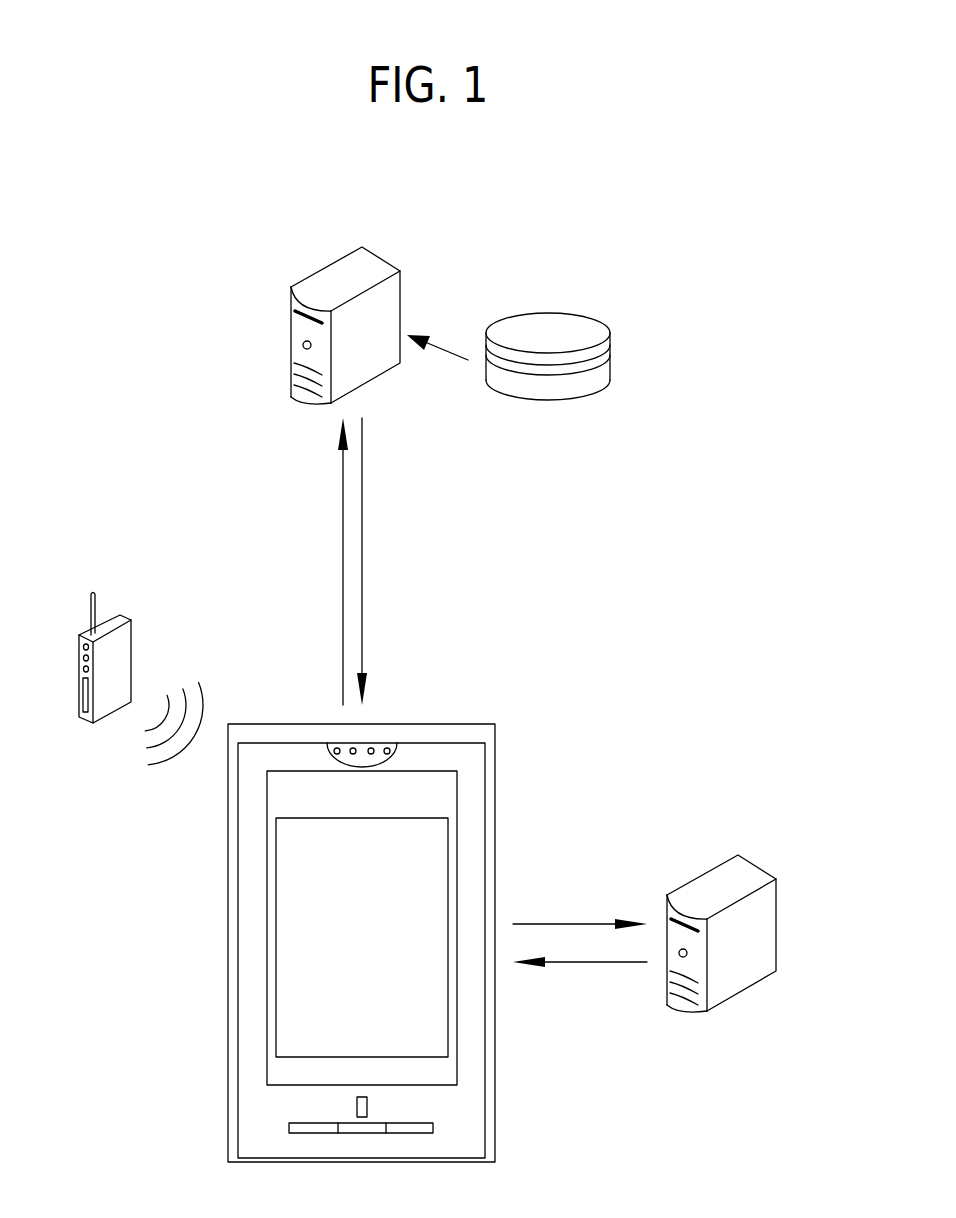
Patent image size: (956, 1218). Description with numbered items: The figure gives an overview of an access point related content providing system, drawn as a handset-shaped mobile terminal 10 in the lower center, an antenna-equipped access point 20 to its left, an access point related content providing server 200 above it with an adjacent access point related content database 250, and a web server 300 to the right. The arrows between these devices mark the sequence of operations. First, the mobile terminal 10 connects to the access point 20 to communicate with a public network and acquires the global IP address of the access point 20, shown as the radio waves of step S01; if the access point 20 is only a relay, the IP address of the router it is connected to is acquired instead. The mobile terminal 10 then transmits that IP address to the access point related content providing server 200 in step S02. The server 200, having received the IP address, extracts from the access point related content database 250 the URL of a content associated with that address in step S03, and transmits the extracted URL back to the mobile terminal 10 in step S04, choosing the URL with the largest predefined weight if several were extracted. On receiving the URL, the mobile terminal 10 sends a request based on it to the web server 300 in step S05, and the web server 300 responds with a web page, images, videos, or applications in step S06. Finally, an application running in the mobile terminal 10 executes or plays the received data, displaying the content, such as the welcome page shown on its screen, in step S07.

The mobile terminal 10 is at (467, 720).
The access point 20 is at (131, 630).
The access point related content providing server 200 is at (388, 262).
The access point related content database 250 is at (595, 315).
The web server 300 is at (765, 872).
The step of connecting to the access point S01 is at (167, 768).
The step of transmitting the IP address S02 is at (341, 552).
The step of extracting the URL S03 is at (452, 347).
The step of transmitting the URL S04 is at (364, 543).
The step of transmitting a request to the web server S05 is at (577, 922).
The step of transmitting content S06 is at (580, 965).
The step of playing the content S07 is at (403, 900).